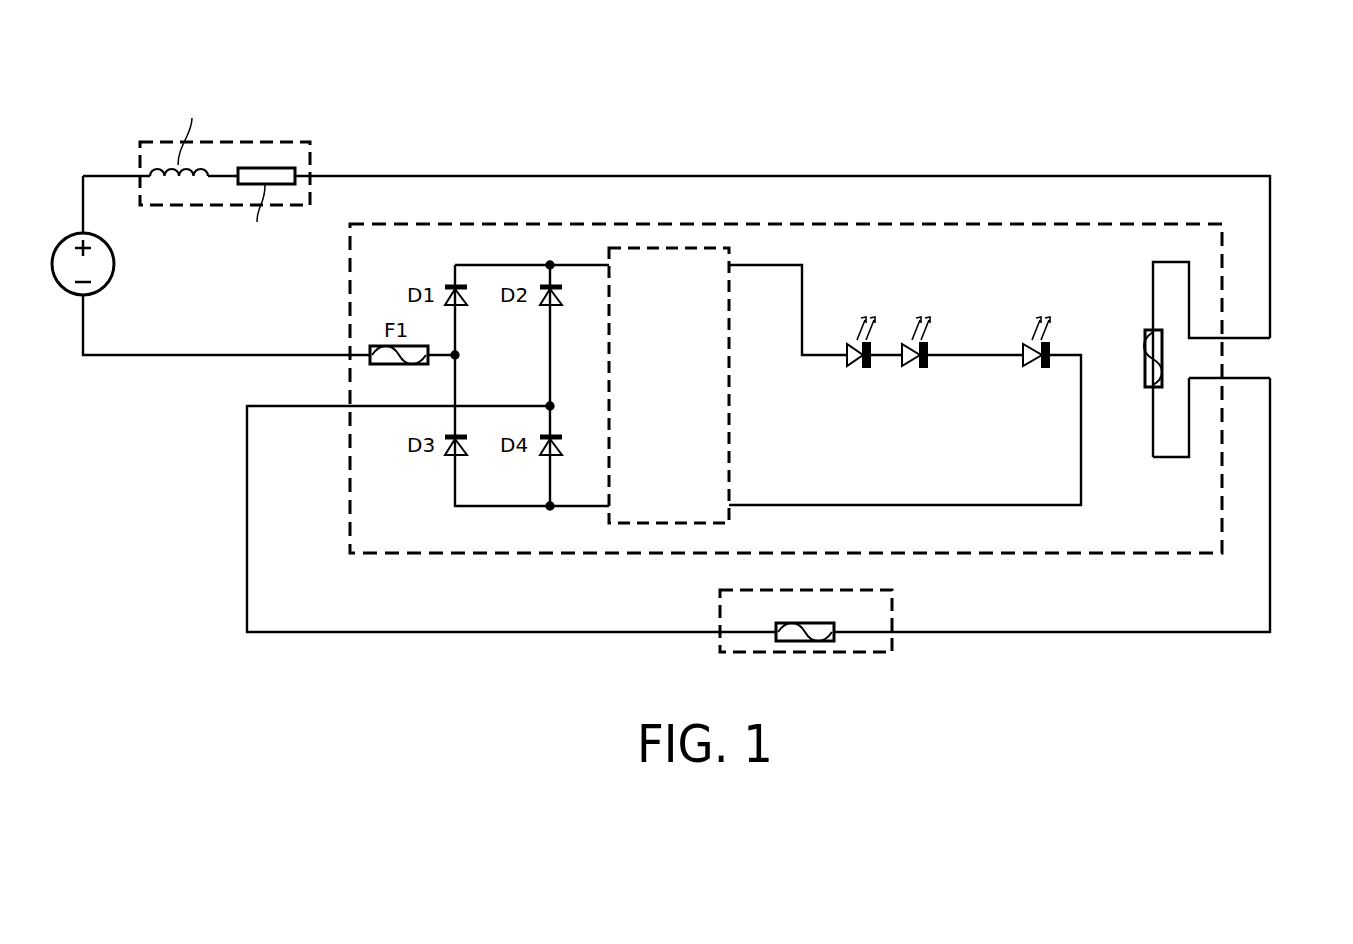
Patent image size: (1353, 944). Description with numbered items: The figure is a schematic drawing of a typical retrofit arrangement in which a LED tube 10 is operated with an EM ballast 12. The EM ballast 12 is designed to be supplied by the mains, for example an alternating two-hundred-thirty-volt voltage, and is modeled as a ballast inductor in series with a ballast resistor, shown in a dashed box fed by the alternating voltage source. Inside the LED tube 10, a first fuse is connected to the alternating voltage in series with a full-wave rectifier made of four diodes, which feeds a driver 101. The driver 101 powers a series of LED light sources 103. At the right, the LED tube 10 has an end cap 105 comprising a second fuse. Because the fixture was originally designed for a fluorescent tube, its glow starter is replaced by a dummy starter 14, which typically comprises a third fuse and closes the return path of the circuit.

The LED tube 10 is at (1130, 232).
The EM ballast 12 is at (285, 142).
The dummy starter 14 is at (865, 653).
The driver 101 is at (690, 395).
The LED light sources 103 is at (1055, 311).
The end cap 105 is at (1203, 315).